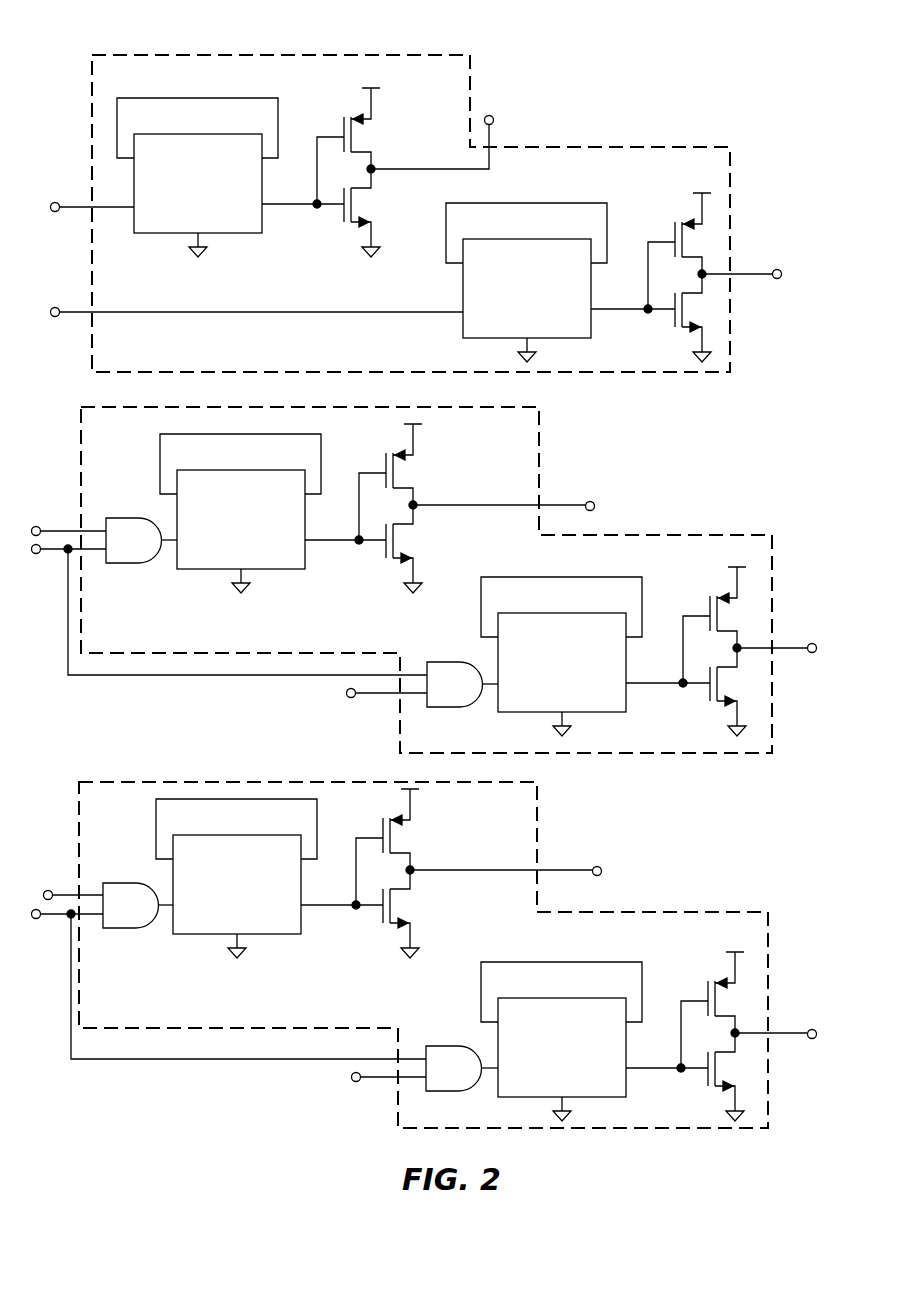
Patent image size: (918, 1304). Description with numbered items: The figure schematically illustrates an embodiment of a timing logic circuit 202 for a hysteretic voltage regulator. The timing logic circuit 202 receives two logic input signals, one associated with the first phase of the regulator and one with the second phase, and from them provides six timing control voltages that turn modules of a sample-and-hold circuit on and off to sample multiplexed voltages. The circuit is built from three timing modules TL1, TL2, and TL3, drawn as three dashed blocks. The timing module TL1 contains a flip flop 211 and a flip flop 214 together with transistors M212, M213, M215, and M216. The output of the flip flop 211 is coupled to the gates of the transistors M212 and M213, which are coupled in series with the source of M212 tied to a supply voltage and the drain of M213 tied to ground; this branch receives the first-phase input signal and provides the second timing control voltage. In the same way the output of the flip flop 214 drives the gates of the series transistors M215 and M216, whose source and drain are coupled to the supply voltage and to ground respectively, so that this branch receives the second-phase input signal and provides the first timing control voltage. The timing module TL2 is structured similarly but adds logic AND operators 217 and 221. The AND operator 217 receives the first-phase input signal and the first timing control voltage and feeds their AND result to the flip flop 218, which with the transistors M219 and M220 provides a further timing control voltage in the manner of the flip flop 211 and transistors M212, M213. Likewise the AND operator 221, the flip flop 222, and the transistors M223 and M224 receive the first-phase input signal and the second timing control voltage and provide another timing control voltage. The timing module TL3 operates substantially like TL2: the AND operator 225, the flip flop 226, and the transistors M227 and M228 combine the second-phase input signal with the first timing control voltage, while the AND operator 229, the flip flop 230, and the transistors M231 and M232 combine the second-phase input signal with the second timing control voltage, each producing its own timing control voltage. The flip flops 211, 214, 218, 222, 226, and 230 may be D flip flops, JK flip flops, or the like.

The timing logic circuit 202 is at (678, 82).
The timing module TL1 is at (730, 185).
The timing module TL2 is at (738, 535).
The timing module TL3 is at (733, 912).
The flip flop 211 is at (214, 193).
The flip flop 214 is at (543, 298).
The flip flop 218 is at (257, 529).
The flip flop 222 is at (578, 672).
The flip flop 226 is at (253, 894).
The flip flop 230 is at (578, 1057).
The logic AND operator 217 is at (150, 563).
The logic AND operator 221 is at (449, 662).
The logic AND operator 225 is at (147, 928).
The logic AND operator 229 is at (447, 1046).
The transistor M212 is at (344, 120).
The transistor M213 is at (343, 218).
The transistor M215 is at (674, 226).
The transistor M216 is at (675, 318).
The transistor M219 is at (394, 480).
The transistor M220 is at (384, 552).
The transistor M223 is at (709, 600).
The transistor M224 is at (710, 695).
The transistor M227 is at (382, 822).
The transistor M228 is at (382, 917).
The transistor M231 is at (707, 985).
The transistor M232 is at (708, 1078).